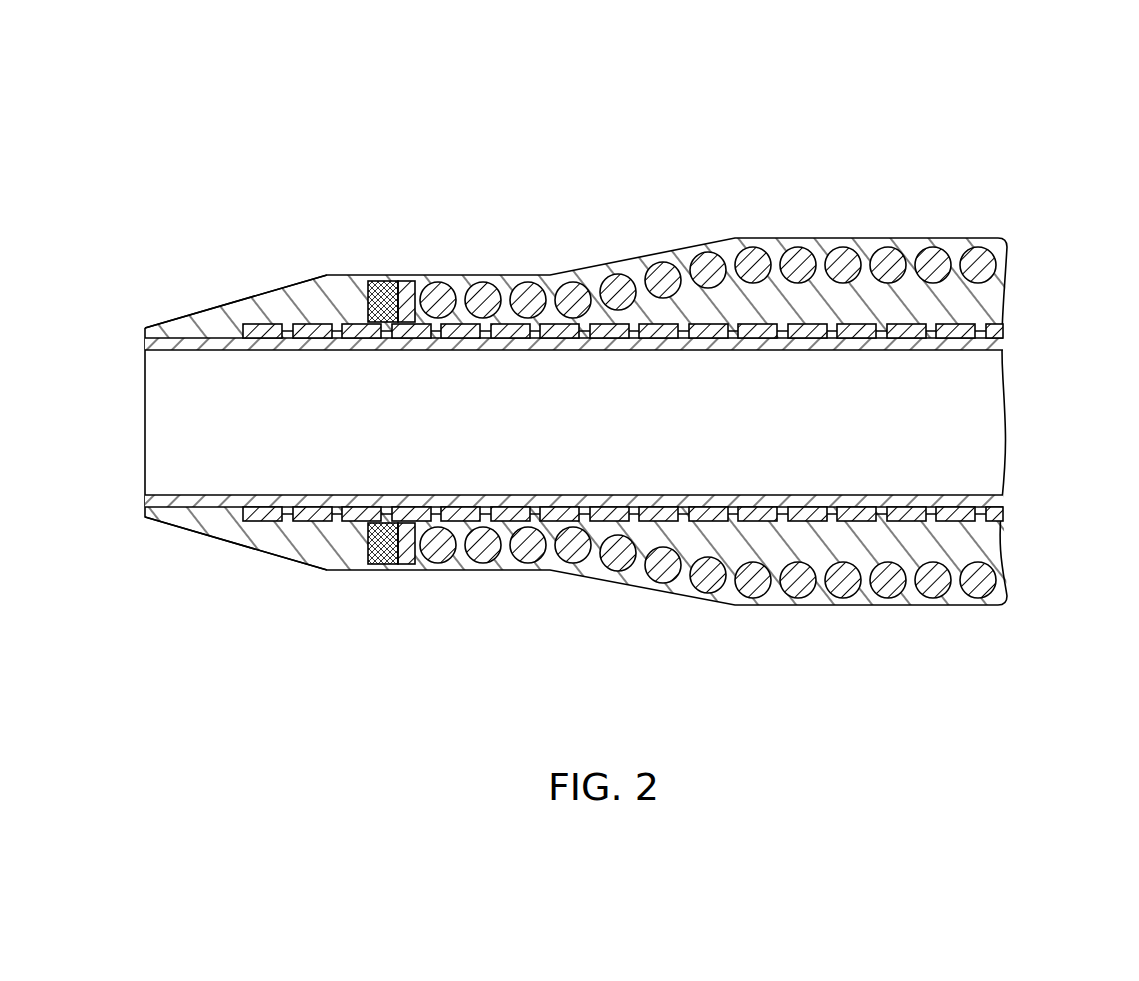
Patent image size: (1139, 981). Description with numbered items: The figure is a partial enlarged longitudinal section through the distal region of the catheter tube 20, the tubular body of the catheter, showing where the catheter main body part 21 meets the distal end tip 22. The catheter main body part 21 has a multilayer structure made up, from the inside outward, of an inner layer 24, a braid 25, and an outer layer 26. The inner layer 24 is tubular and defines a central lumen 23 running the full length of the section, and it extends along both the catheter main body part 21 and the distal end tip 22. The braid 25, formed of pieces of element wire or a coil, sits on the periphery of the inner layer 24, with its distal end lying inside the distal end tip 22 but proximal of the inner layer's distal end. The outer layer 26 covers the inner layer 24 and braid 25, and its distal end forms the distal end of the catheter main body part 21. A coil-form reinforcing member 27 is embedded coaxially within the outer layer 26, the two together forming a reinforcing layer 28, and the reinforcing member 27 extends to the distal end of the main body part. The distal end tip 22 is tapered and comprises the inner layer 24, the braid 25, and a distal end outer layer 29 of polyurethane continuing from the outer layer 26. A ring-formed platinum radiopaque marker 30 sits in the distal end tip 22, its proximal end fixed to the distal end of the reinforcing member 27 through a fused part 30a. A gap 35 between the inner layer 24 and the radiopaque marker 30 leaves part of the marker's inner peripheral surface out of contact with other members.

The catheter tube 20 is at (598, 362).
The catheter main body part 21 is at (917, 243).
The distal end tip 22 is at (243, 312).
The lumen 23 is at (948, 408).
The inner layer 24 is at (1002, 503).
The braid 25 is at (1002, 330).
The outer layer 26 is at (965, 292).
The reinforcing member 27 is at (978, 588).
The reinforcing layer 28 is at (1030, 562).
The distal end outer layer 29 is at (275, 305).
The radiopaque marker 30 is at (372, 278).
The fused part 30a is at (410, 276).
The gap 35 is at (390, 326).